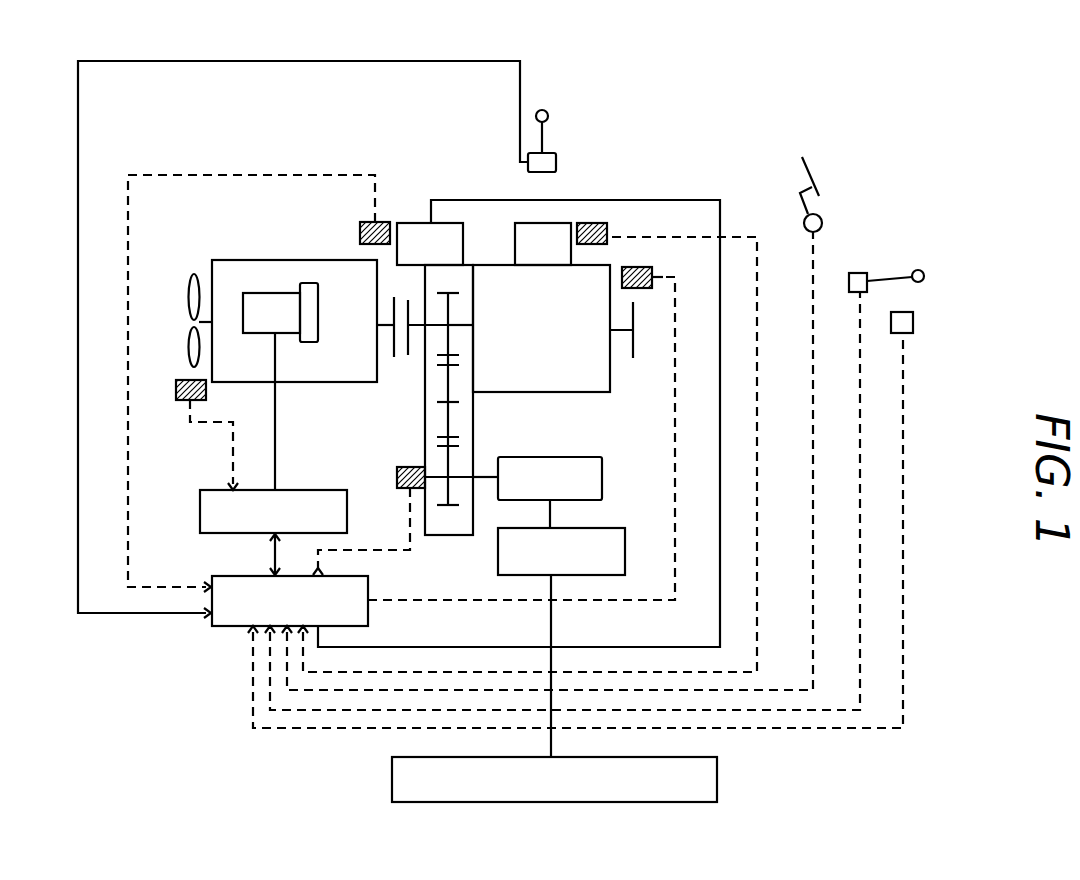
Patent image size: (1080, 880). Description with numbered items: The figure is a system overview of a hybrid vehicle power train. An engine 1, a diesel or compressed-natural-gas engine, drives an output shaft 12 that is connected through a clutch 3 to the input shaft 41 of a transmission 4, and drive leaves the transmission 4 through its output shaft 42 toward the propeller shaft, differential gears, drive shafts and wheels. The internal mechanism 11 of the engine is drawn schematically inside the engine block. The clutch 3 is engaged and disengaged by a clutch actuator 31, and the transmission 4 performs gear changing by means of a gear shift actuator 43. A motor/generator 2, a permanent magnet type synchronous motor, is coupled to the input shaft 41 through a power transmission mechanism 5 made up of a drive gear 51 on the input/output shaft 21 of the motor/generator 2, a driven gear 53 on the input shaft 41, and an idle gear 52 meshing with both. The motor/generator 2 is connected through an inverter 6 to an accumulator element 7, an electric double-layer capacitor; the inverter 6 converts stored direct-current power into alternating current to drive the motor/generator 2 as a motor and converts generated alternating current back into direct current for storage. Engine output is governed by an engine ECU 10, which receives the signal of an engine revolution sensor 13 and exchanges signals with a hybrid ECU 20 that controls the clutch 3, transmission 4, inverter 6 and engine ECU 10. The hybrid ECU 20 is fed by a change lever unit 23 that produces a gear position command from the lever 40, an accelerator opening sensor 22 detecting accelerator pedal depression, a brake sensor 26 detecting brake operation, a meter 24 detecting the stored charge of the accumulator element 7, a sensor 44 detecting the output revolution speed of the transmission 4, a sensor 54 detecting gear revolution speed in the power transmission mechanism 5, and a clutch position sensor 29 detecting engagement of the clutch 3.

The engine 1 is at (229, 260).
The motor/generator 2 is at (602, 479).
The clutch 3 is at (394, 300).
The transmission 4 is at (592, 395).
The power transmission mechanism 5 is at (475, 420).
The inverter 6 is at (625, 548).
The accumulator element 7 is at (508, 802).
The engine ECU 10 is at (200, 508).
The engine piston/crank mechanism 11 is at (268, 293).
The output shaft 12 is at (380, 328).
The engine revolution sensor 13 is at (178, 380).
The hybrid ECU 20 is at (228, 630).
The input/output shaft 21 is at (483, 482).
The accelerator opening sensor 22 is at (820, 214).
The change lever unit 23 is at (592, 223).
The meter 24 is at (913, 322).
The brake sensor 26 is at (857, 273).
The clutch position sensor 29 is at (360, 226).
The clutch actuator 31 is at (410, 223).
The shift lever 40 is at (548, 124).
The input shaft 41 is at (460, 325).
The output shaft 42 is at (623, 336).
The gear shift actuator 43 is at (556, 223).
The sensor 44 is at (637, 267).
The drive gear 51 is at (445, 508).
The idle gear 52 is at (448, 421).
The driven gear 53 is at (457, 292).
The sensor 54 is at (397, 478).